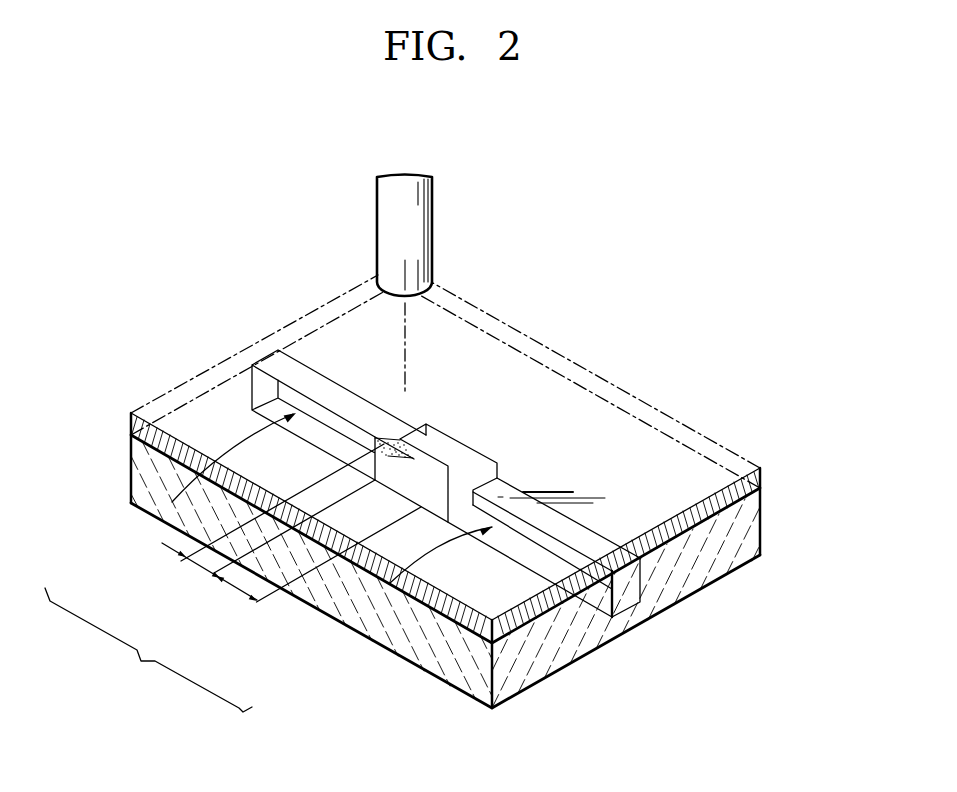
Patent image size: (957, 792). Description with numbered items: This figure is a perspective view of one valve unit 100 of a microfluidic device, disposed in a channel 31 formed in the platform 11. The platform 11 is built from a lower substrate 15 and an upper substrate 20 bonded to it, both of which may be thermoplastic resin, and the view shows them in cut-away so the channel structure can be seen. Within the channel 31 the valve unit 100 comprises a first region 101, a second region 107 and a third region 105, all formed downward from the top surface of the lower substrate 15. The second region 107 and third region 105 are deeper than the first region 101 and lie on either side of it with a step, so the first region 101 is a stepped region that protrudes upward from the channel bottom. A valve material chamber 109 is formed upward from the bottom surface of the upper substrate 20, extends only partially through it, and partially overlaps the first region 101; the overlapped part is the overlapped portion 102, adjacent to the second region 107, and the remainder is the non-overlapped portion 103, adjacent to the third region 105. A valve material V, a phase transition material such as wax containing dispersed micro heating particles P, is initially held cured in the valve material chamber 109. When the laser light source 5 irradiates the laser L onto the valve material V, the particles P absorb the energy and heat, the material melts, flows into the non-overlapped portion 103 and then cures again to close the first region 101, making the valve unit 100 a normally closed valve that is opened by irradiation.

The laser light source 5 is at (432, 220).
The laser L is at (405, 341).
The valve unit 100 is at (484, 484).
The platform 11 is at (498, 491).
The upper substrate 20 is at (758, 483).
The lower substrate 15 is at (756, 530).
The third region 105 is at (165, 520).
The second region 107 is at (372, 627).
The valve material chamber 109 is at (445, 474).
The micro heating particles P is at (388, 440).
The valve material V is at (378, 441).
The first region 101 is at (215, 620).
The overlapped portion 102 is at (309, 559).
The non-overlapped portion 103 is at (273, 522).
The channel 31 is at (148, 650).